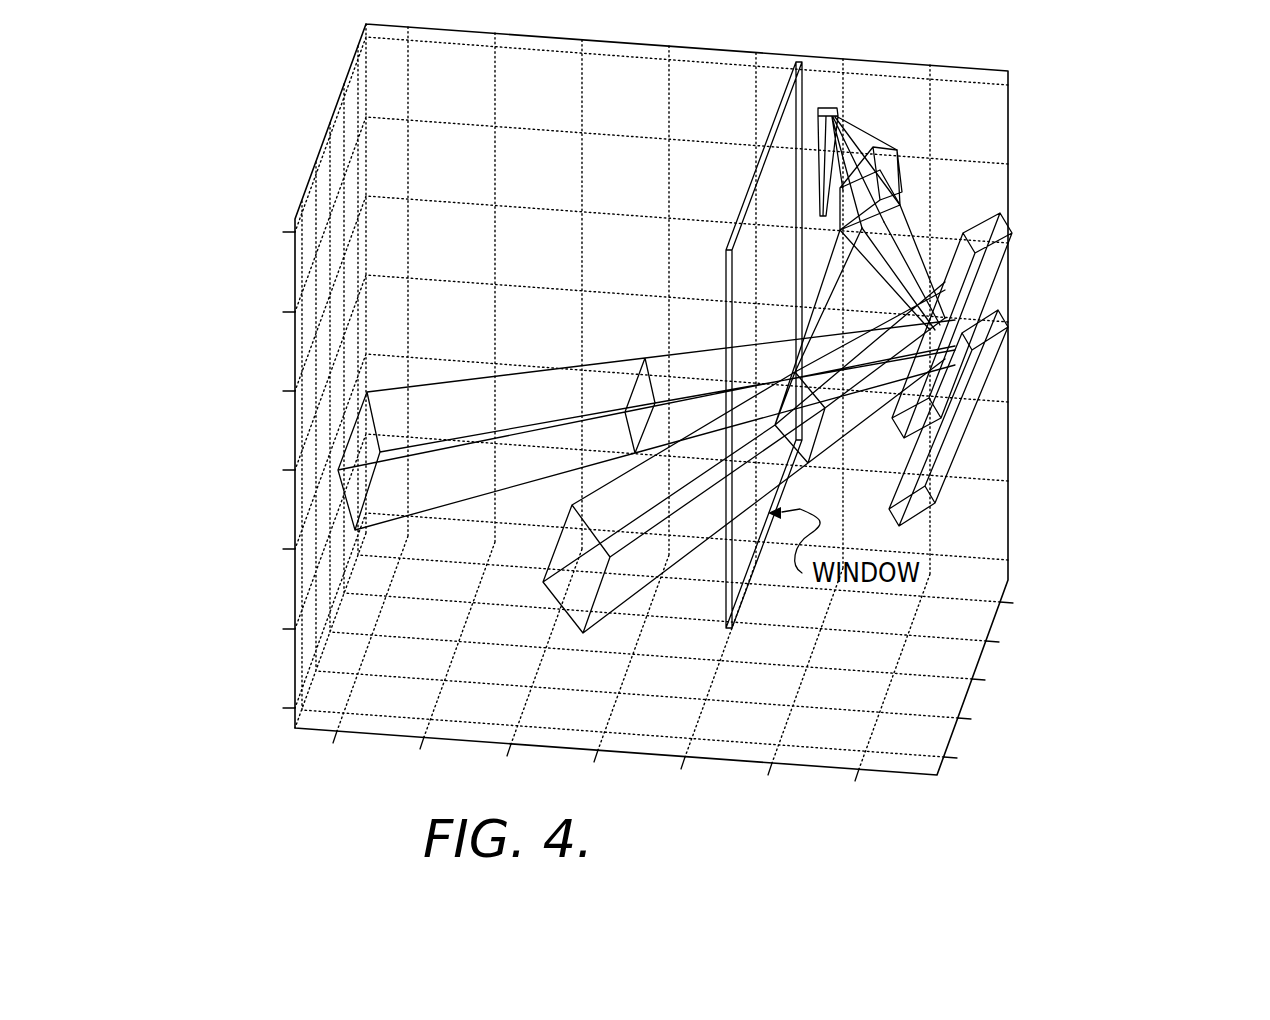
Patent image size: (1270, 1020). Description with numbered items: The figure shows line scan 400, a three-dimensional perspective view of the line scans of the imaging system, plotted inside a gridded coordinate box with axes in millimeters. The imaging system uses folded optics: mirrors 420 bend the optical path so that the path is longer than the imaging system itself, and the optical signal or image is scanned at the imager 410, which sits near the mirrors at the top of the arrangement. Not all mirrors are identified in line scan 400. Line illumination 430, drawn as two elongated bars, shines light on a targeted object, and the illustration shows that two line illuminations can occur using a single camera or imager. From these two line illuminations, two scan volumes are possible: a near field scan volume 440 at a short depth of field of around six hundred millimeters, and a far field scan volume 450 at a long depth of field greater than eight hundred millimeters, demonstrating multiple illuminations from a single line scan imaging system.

The line scan 400 is at (230, 120).
The imager 410 is at (825, 218).
The mirrors 420 is at (917, 190).
The line illumination 430 is at (1069, 369).
The near field scan volume 440 is at (744, 467).
The far field scan volume 450 is at (646, 494).